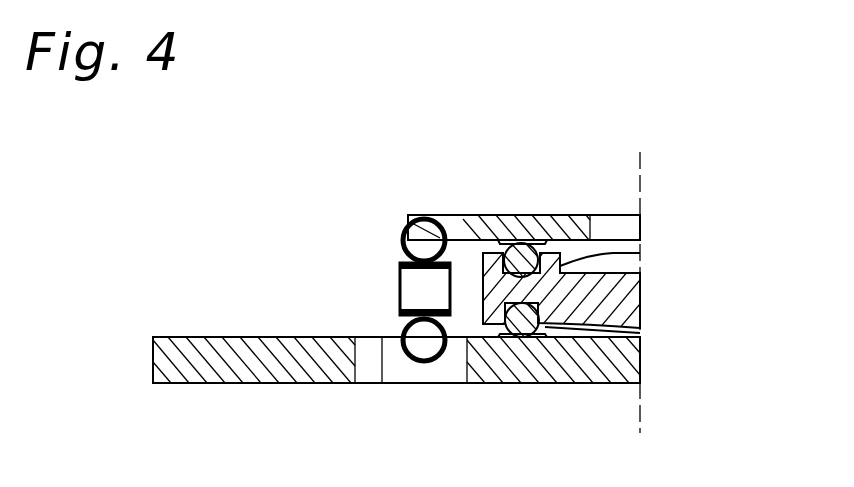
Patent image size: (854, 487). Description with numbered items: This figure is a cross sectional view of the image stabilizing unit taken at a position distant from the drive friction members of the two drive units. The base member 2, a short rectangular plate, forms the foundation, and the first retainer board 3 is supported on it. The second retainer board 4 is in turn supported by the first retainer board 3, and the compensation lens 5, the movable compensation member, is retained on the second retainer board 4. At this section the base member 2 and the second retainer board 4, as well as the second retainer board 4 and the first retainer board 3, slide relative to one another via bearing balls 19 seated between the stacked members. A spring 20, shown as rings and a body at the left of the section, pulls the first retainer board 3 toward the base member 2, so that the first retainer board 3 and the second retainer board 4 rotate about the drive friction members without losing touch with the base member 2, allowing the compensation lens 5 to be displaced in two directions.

The base member 2 is at (640, 362).
The first retainer board 3 is at (640, 227).
The second retainer board 4 is at (640, 302).
The compensation lens 5 is at (615, 253).
The ball 19 is at (537, 245).
The spring 20 is at (400, 270).